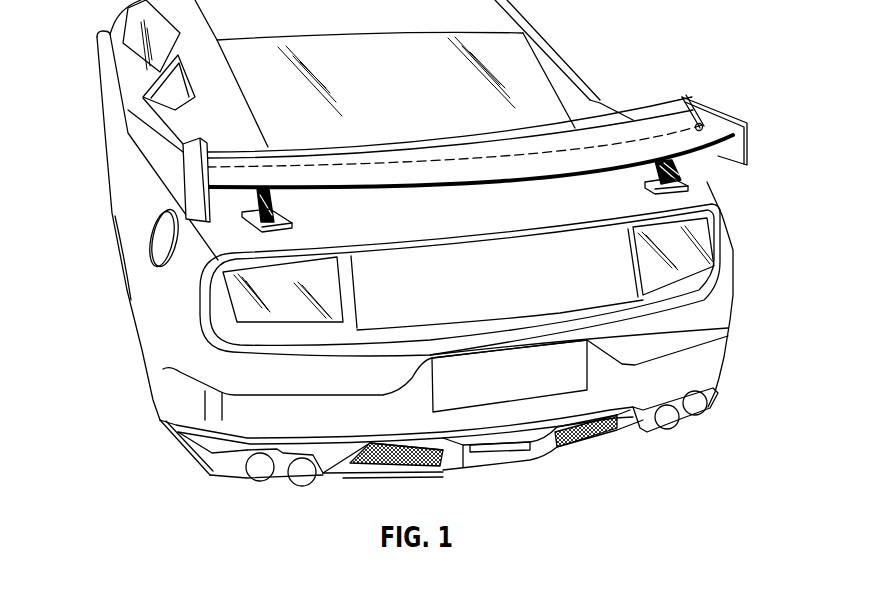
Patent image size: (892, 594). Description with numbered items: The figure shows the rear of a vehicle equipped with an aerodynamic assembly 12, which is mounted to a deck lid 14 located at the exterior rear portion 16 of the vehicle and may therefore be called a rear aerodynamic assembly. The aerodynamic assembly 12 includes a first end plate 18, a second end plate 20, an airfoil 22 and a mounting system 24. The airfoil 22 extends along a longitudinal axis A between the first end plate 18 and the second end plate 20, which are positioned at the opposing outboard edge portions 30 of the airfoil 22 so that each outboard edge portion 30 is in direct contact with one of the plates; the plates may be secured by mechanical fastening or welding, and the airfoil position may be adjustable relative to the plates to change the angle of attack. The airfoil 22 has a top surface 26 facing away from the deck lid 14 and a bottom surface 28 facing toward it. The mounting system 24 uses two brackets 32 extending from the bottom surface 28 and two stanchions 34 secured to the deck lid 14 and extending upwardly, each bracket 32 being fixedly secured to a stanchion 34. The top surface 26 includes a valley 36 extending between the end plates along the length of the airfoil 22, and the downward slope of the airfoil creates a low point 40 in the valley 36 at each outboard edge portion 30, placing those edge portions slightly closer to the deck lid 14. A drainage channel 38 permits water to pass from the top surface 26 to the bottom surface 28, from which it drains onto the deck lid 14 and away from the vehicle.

The aerodynamic assembly 12 is at (654, 106).
The deck lid 14 is at (513, 200).
The exterior rear portion 16 is at (117, 307).
The first end plate 18 is at (682, 95).
The second end plate 20 is at (188, 152).
The airfoil 22 is at (338, 164).
The mounting system 24 is at (263, 240).
The top surface 26 is at (468, 157).
The bottom surface 28 is at (466, 189).
The outboard edge portions 30 is at (201, 138).
The bracket 32 is at (272, 191).
The stanchion 34 is at (290, 222).
The valley 36 is at (565, 160).
The drainage channel 38 is at (703, 124).
The low point 40 is at (732, 131).
The longitudinal axis A is at (392, 166).